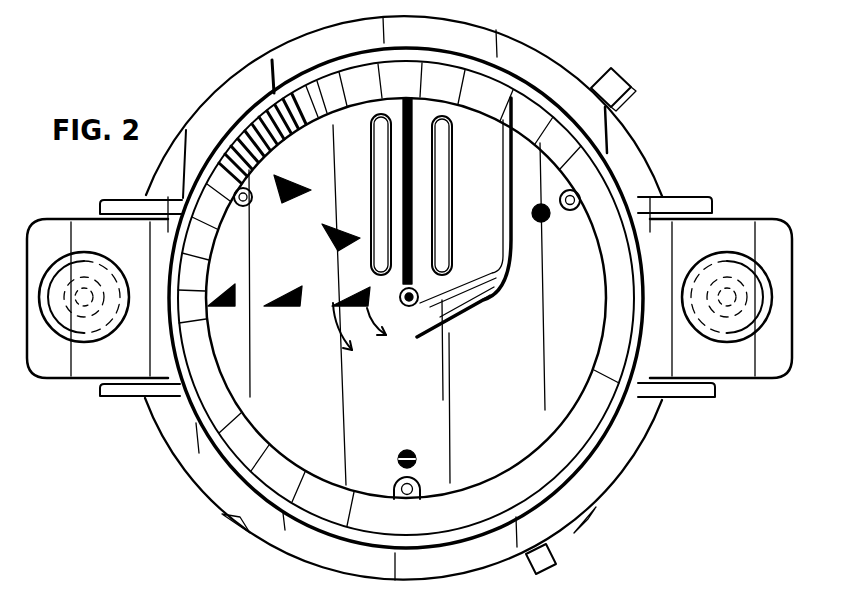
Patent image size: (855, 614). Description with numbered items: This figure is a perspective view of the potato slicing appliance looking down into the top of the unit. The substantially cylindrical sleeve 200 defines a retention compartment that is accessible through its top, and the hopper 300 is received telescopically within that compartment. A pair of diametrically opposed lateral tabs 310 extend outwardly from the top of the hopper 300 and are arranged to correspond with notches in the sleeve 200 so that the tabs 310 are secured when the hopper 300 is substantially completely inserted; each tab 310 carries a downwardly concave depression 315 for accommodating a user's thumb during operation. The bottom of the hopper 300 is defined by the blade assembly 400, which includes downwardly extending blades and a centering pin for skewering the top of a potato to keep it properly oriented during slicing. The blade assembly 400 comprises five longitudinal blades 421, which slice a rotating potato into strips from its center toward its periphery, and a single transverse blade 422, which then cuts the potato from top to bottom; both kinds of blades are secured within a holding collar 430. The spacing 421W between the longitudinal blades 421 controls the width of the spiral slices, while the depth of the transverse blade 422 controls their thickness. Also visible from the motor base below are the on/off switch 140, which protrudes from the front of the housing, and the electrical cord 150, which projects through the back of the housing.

The sleeve 200 is at (283, 52).
The hopper 300 is at (509, 72).
The electrical cord 150 is at (612, 71).
The on/off switch 140 is at (556, 553).
The lateral tabs 310 is at (50, 227).
The downwardly concave depressions 315 is at (103, 317).
The holding collar 430 is at (595, 193).
The blade assembly 400 is at (432, 435).
The transverse blade 422 is at (378, 122).
The longitudinal blades 421 is at (283, 206).
The spacing 421W is at (374, 347).